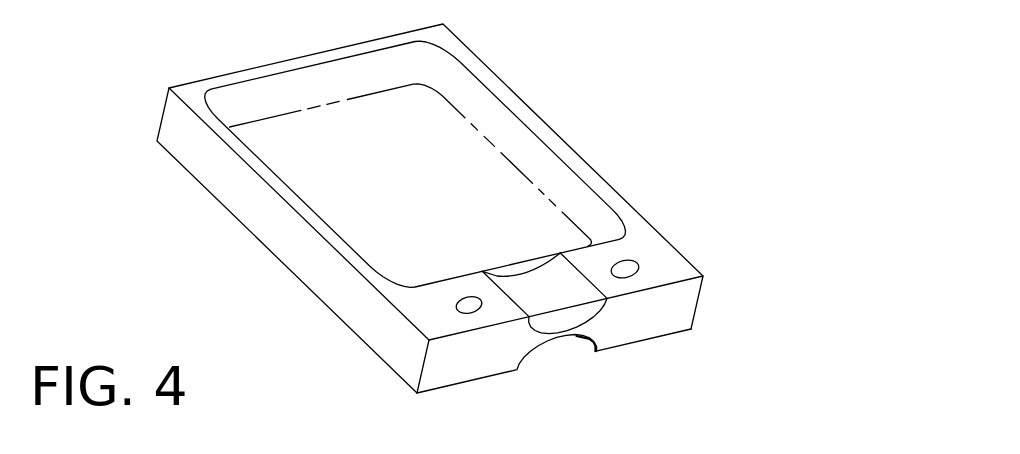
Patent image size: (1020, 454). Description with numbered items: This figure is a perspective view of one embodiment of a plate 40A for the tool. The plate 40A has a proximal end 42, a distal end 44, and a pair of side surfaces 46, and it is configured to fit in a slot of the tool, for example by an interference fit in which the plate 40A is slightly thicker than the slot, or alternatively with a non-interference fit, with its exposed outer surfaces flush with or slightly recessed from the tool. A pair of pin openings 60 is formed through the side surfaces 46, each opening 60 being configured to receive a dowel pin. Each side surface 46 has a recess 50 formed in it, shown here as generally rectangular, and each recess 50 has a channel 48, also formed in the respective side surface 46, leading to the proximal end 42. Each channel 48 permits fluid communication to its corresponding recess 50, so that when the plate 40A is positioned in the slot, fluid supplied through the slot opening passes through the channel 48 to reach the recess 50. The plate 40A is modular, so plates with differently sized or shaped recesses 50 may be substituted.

The plate 40A is at (570, 58).
The proximal end 42 is at (482, 358).
The distal end 44 is at (247, 68).
The side surfaces 46 is at (427, 303).
The channel 48 is at (557, 305).
The recess 50 is at (427, 187).
The pin openings 60 is at (462, 297).